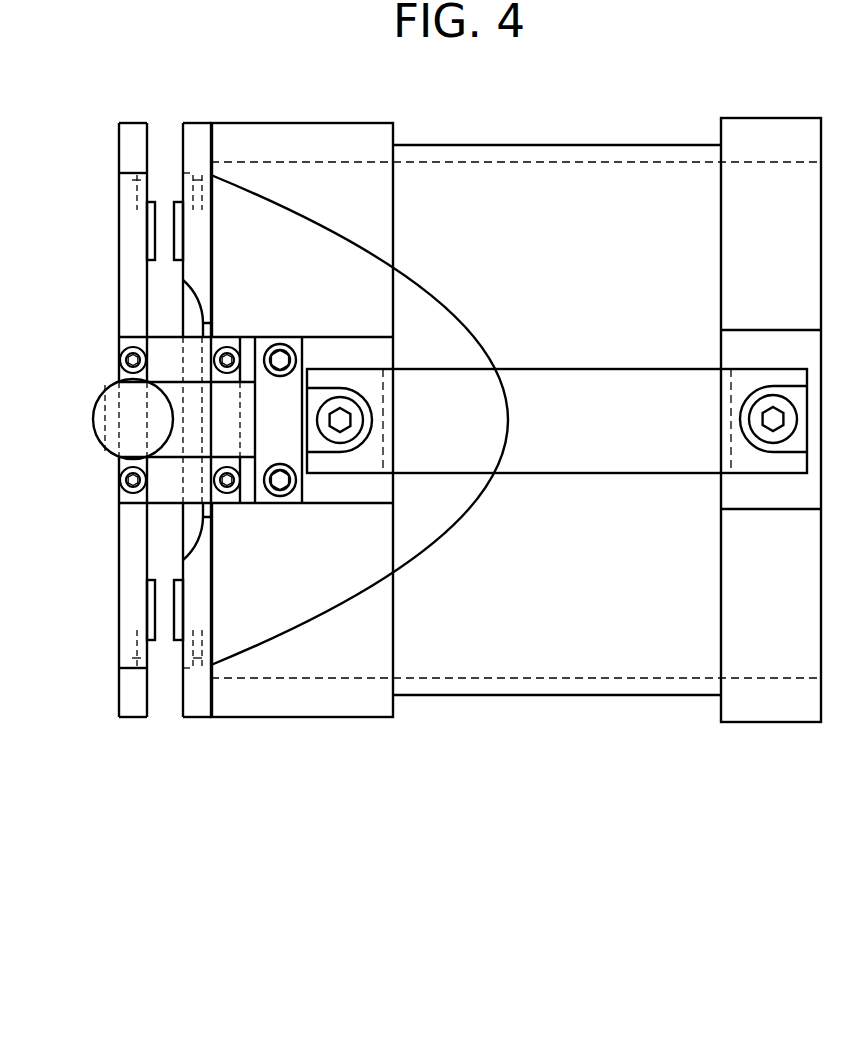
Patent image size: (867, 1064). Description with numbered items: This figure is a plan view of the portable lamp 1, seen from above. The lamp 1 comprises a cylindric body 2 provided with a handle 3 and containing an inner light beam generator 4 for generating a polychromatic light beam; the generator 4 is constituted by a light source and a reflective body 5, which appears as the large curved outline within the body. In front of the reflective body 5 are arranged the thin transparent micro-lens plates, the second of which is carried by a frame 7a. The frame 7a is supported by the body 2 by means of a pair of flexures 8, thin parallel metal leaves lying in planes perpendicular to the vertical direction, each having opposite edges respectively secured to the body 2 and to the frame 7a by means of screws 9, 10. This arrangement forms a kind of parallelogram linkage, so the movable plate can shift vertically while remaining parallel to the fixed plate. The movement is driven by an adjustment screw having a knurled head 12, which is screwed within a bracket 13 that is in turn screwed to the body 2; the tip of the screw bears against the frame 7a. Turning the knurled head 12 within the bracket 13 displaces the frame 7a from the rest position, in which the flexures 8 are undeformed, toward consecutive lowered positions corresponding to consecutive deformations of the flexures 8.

The portable lamp 1 is at (320, 790).
The cylindric body 2 is at (480, 655).
The handle 3 is at (582, 448).
The inner light beam generator 4 is at (365, 297).
The reflective body 5 is at (458, 313).
The frame 7a is at (128, 707).
The flexures 8 is at (167, 343).
The screws 9 is at (221, 350).
The screws 10 is at (122, 356).
The knurled head 12 is at (103, 432).
The bracket 13 is at (193, 437).